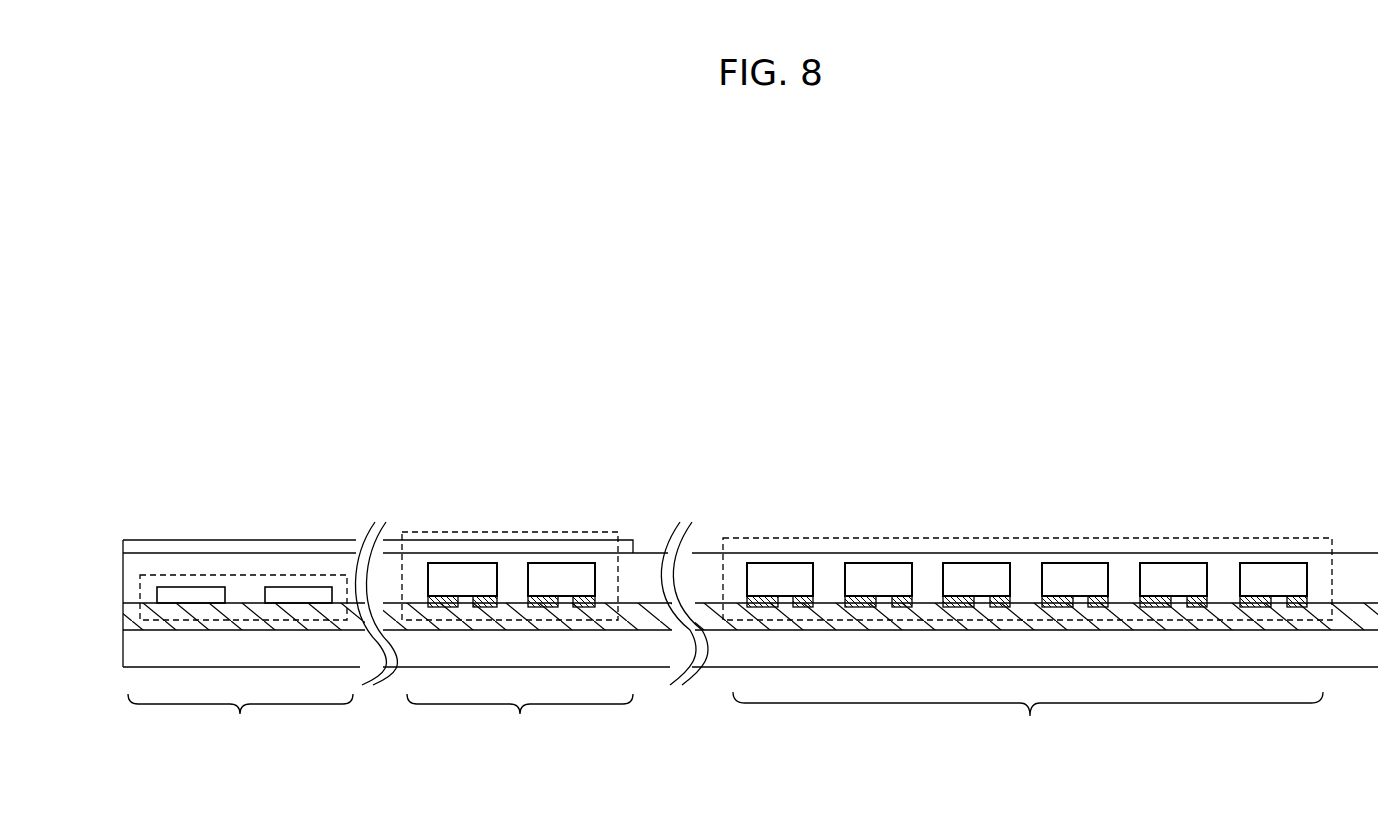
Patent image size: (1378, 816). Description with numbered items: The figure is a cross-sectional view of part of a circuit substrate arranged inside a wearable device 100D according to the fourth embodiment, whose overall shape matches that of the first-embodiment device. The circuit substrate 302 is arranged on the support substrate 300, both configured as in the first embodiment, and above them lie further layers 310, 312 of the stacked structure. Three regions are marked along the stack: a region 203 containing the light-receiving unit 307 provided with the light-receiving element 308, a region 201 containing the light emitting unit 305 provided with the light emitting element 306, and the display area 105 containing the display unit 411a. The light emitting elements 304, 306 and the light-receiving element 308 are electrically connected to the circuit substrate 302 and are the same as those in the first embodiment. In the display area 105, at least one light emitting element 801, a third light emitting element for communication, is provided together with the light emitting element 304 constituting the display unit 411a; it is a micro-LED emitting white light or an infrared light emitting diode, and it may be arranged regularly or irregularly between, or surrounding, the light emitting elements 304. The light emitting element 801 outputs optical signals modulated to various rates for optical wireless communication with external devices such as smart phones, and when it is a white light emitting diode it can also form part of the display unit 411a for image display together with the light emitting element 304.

The wearable device 100D is at (418, 221).
The upper layer 312 is at (123, 541).
The intermediate layer 310 is at (123, 573).
The circuit substrate 302 is at (123, 612).
The support substrate 300 is at (123, 648).
The third region 203 is at (240, 719).
The second region 201 is at (520, 719).
The display area 105 is at (1028, 718).
The light-receiving unit 307 is at (253, 575).
The light-receiving element 308 is at (310, 587).
The light emitting unit 305 is at (487, 532).
The light emitting element 306 is at (560, 563).
The light emitting element 304 is at (780, 563).
The light emitting element 801 is at (979, 563).
The display unit 411a is at (1225, 538).